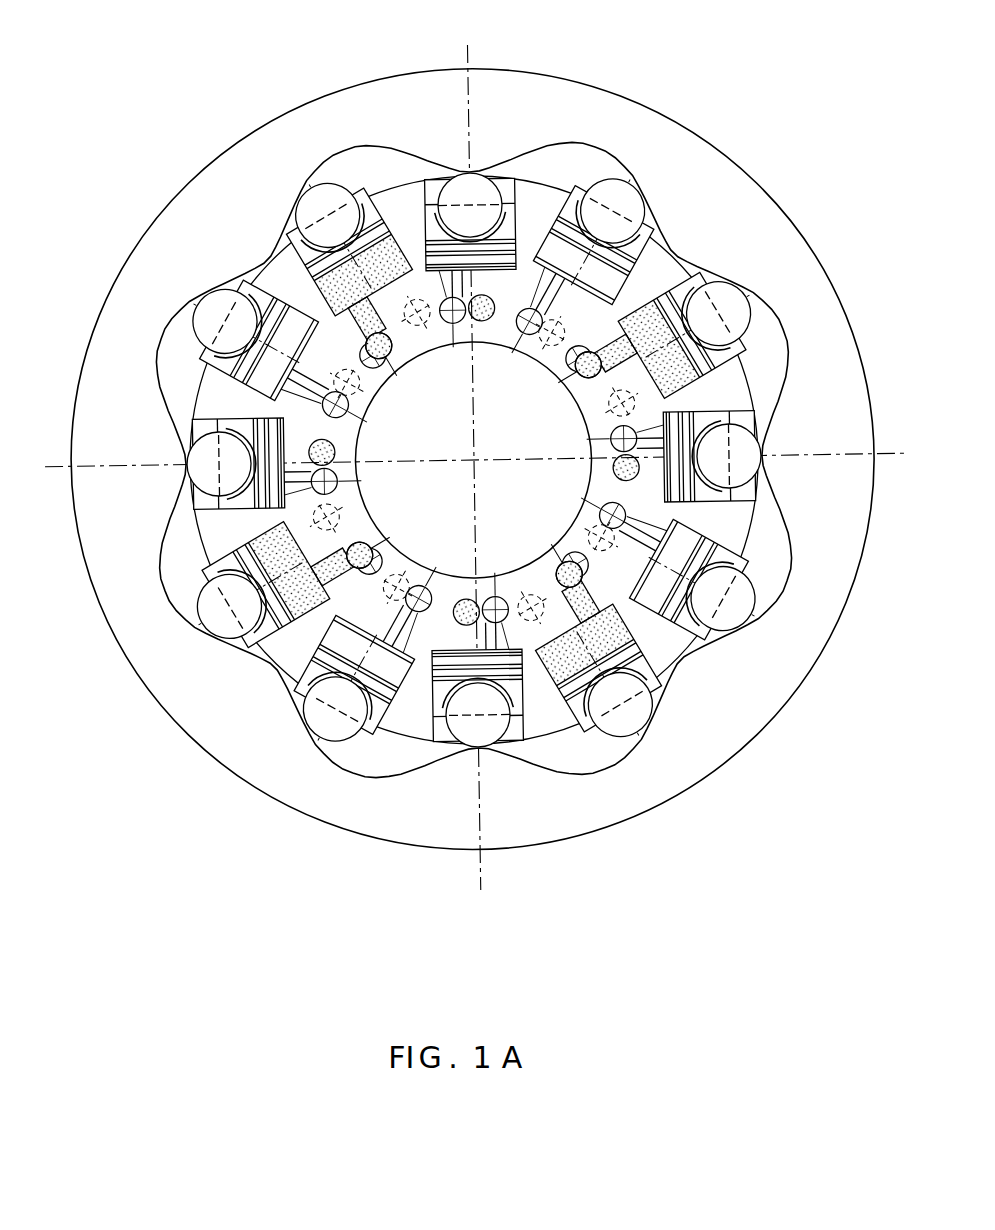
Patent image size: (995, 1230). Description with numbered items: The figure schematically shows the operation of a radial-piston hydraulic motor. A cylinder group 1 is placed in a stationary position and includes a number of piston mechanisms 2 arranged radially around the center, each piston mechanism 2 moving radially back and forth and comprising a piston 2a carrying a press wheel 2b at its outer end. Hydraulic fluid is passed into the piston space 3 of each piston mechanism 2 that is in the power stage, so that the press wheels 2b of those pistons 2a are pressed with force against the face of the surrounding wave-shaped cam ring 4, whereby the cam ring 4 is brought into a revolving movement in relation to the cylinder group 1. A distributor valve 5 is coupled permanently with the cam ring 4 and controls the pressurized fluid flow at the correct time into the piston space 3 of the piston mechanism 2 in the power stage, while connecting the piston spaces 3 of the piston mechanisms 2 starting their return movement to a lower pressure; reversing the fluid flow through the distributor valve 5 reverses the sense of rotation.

The cylinder group 1 is at (680, 257).
The piston mechanism 2 is at (633, 221).
The piston 2a is at (637, 267).
The press wheel 2b is at (634, 198).
The piston space 3 is at (557, 205).
The cam ring 4 is at (398, 87).
The distributor valve 5 is at (413, 195).